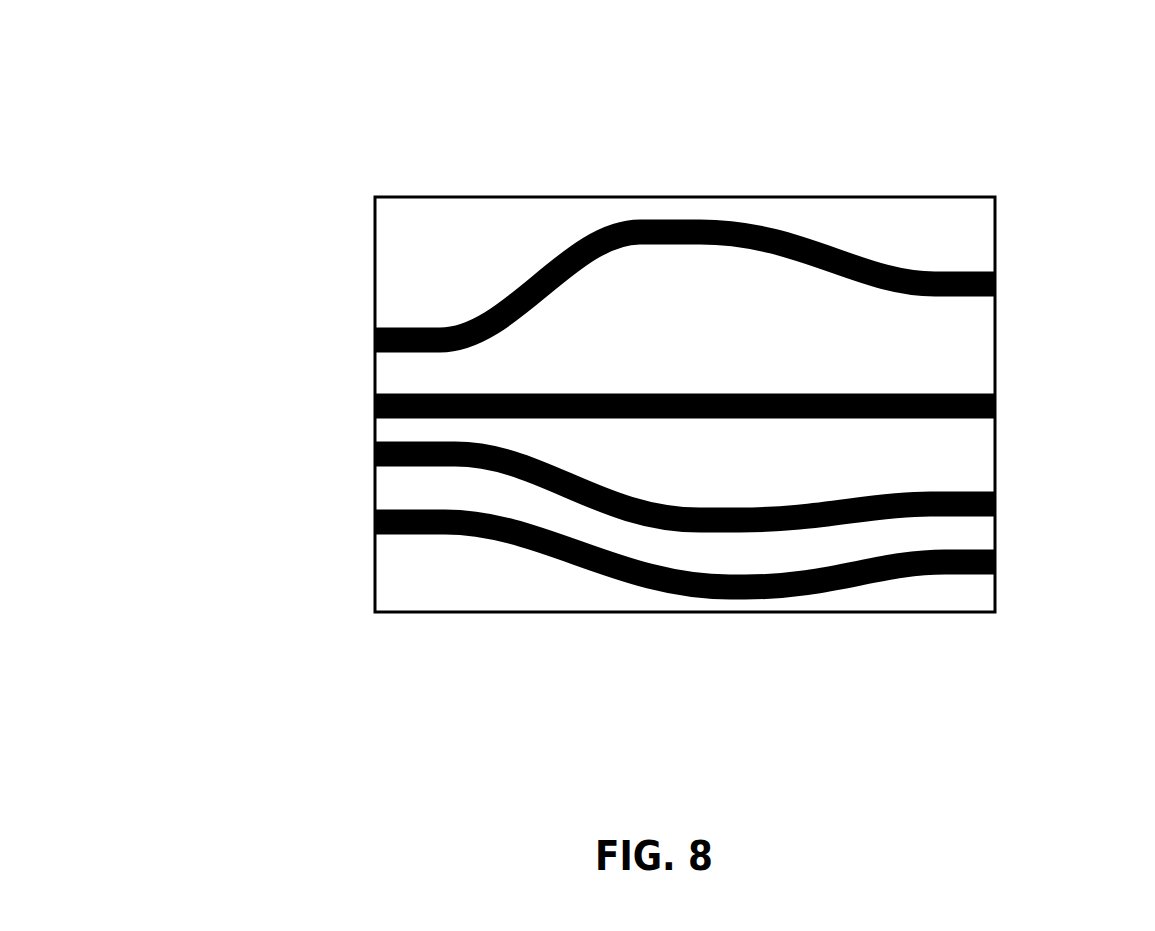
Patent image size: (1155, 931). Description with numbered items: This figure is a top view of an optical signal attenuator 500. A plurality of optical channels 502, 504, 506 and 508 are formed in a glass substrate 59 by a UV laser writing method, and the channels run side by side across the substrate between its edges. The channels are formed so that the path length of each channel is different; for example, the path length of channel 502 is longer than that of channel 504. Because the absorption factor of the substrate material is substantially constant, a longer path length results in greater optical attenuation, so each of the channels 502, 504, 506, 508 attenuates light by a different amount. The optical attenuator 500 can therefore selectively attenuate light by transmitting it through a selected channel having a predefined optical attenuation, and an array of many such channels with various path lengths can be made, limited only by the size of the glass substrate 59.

The optical signal attenuator 500 is at (1026, 135).
The glass substrate 59 is at (432, 592).
The optical channel 502 is at (375, 342).
The optical channel 504 is at (375, 403).
The optical channel 506 is at (953, 490).
The optical channel 508 is at (705, 595).